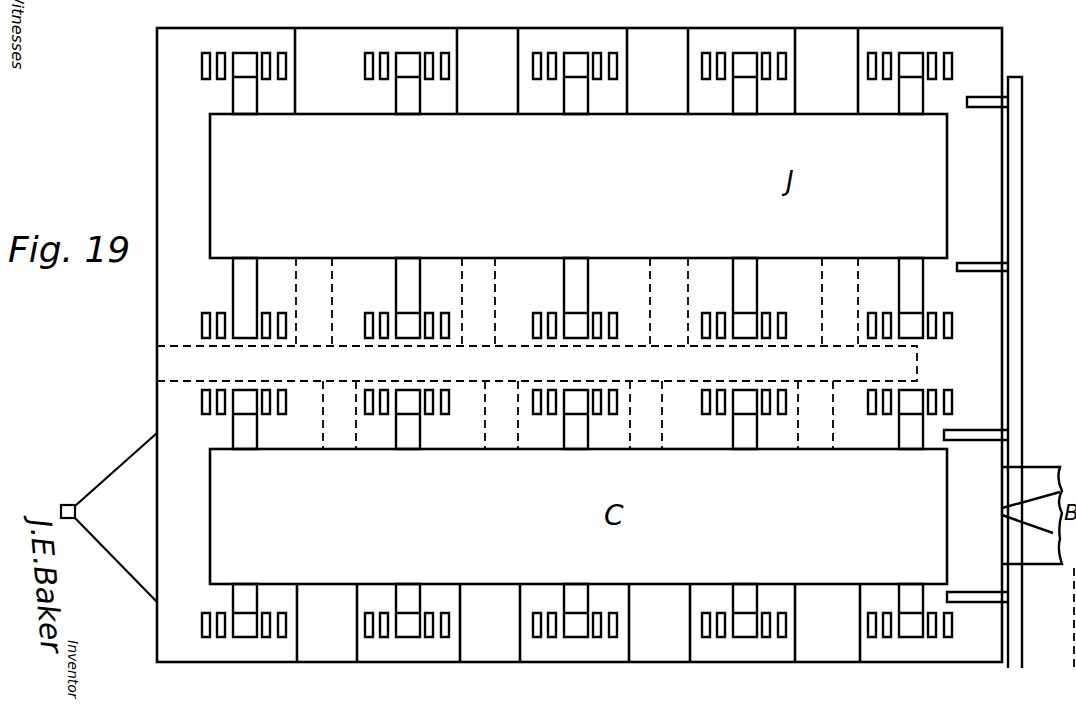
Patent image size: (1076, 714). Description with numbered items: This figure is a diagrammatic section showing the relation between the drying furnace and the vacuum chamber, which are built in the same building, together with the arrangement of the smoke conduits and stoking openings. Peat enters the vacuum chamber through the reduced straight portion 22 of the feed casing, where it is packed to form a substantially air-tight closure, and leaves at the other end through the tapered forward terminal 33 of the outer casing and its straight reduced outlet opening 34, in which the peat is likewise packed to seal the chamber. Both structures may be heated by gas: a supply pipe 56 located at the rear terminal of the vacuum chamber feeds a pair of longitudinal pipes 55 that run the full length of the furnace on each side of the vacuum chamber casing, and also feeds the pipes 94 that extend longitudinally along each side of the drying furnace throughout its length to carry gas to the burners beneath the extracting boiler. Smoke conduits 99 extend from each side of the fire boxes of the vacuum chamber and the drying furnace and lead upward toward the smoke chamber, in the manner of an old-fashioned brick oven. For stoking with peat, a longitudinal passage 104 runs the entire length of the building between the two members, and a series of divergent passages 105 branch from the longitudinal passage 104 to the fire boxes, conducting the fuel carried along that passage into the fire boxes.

The smoke conduit 99 is at (248, 106).
The divergent passage 105 is at (317, 334).
The longitudinal passage 104 is at (188, 367).
The forward terminal 33 is at (115, 480).
The outlet opening 34 is at (68, 504).
The supply pipe 56 is at (1022, 210).
The pipes 94 is at (980, 108).
The longitudinal pipes 55 is at (972, 441).
The reduced straight portion 22 is at (1023, 508).